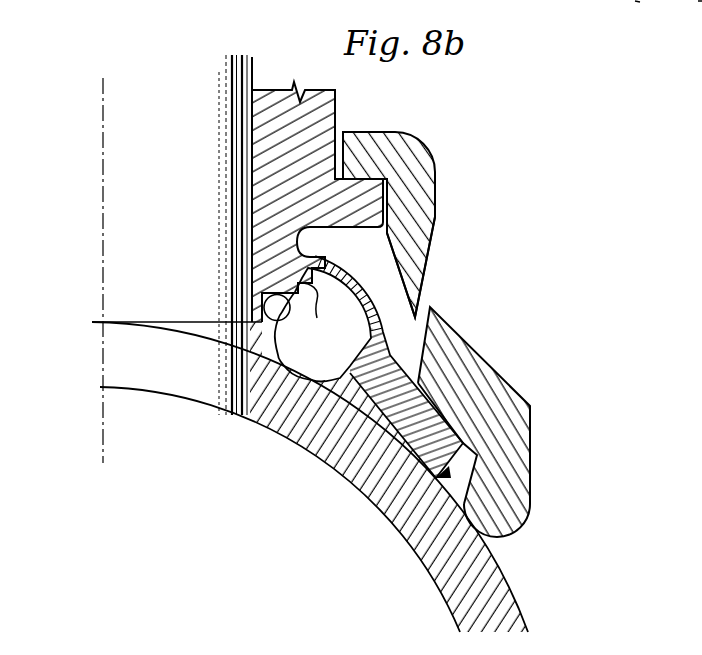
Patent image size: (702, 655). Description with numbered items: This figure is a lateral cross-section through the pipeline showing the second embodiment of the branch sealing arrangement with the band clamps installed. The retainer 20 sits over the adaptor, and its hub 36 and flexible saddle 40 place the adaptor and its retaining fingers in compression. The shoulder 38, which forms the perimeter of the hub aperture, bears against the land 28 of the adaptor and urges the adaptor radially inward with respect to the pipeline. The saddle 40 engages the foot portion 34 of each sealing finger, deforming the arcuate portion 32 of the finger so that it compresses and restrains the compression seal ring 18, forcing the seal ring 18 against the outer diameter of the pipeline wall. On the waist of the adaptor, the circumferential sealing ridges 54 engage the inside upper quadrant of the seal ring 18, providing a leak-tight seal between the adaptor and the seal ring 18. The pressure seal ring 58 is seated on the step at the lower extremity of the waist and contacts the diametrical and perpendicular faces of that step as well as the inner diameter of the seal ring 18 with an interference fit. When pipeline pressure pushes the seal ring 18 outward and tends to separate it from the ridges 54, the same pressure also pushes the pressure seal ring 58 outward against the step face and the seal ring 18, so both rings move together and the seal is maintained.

The seal ring 18 is at (326, 363).
The retainer 20 is at (539, 452).
The land 28 is at (365, 193).
The arcuate portion 32 is at (365, 300).
The foot portion 34 is at (405, 368).
The hub 36 is at (437, 213).
The shoulder 38 is at (397, 132).
The flexible saddle 40 is at (513, 500).
The circumferential sealing ridges 54 is at (323, 325).
The pressure seal ring 58 is at (277, 321).